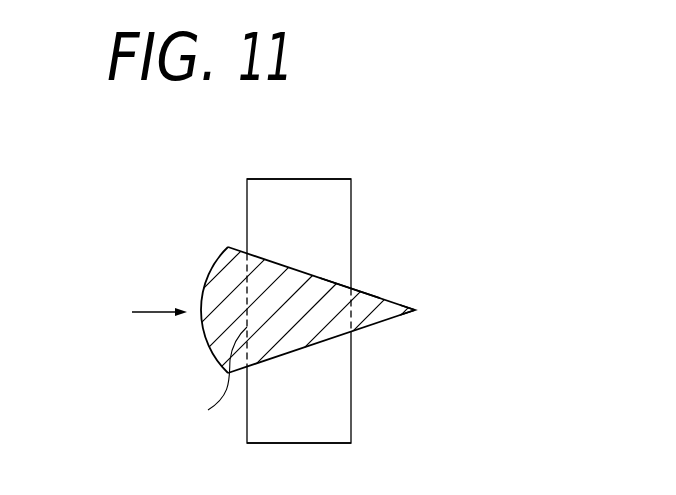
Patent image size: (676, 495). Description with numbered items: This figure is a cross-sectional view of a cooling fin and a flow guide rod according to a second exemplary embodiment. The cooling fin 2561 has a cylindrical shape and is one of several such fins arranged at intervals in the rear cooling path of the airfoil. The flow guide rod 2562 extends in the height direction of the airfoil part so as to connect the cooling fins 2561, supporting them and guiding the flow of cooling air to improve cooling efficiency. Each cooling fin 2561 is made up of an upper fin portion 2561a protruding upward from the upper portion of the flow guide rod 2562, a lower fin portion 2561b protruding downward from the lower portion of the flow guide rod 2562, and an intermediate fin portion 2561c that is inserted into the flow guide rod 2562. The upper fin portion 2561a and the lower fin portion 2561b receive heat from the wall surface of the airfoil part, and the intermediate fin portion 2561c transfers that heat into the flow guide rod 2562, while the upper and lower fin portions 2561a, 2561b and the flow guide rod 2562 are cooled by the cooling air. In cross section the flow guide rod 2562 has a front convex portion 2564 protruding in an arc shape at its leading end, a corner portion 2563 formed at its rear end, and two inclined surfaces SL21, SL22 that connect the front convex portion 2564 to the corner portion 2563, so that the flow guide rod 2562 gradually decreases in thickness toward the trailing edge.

The cooling fin 2561 is at (362, 227).
The upper fin portion 2561a is at (248, 196).
The lower fin portion 2561b is at (340, 415).
The intermediate fin portion 2561c is at (207, 411).
The flow guide rod 2562 is at (378, 286).
The corner portion 2563 is at (415, 310).
The front convex portion 2564 is at (226, 268).
The inclined surface SL21 is at (345, 286).
The inclined surface SL22 is at (360, 329).